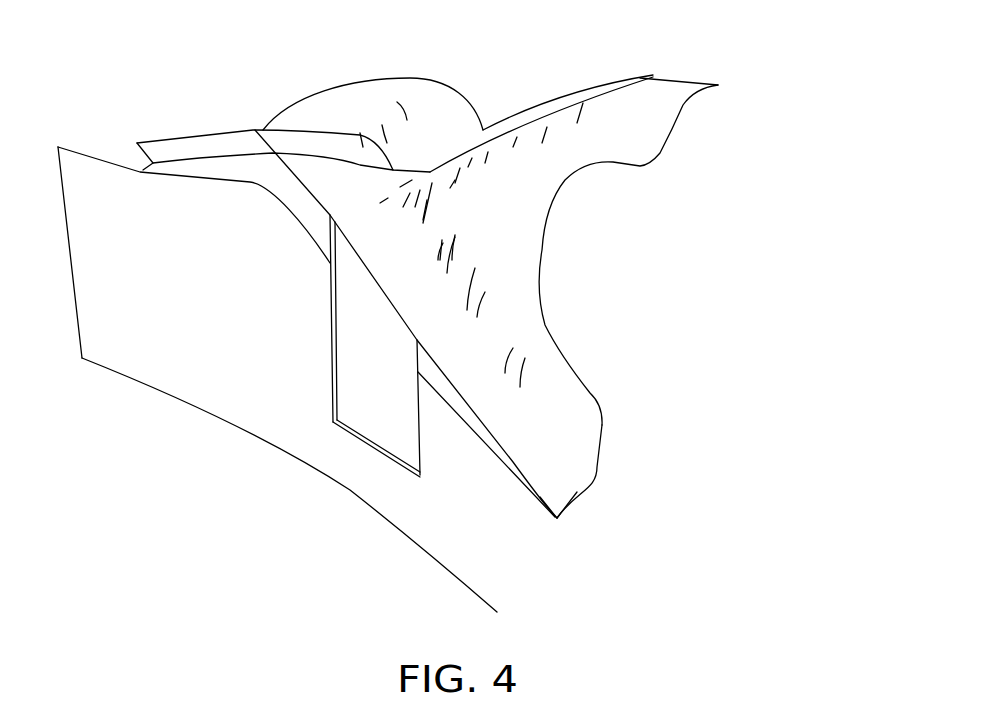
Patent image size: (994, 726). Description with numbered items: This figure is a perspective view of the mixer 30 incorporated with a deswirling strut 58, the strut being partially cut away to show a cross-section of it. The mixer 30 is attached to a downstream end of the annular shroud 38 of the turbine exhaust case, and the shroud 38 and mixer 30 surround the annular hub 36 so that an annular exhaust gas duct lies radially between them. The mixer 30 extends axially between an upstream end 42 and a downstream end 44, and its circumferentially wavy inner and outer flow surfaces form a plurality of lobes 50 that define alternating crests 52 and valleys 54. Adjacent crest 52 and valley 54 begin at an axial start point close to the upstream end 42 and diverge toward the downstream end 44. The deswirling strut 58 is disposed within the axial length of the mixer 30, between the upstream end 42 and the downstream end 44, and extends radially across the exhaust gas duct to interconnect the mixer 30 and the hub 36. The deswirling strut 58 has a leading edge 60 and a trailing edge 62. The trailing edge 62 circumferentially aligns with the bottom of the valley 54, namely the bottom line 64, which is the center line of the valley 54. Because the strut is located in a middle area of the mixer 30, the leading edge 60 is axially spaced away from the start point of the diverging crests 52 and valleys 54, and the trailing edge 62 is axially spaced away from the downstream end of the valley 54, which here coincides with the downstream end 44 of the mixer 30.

The mixer 30 is at (433, 102).
The annular hub 36 is at (163, 390).
The annular shroud 38 is at (83, 150).
The upstream end 42 is at (143, 150).
The downstream end 44 is at (598, 468).
The lobes 50 is at (640, 128).
The crests 52 is at (683, 78).
The valleys 54 is at (558, 520).
The deswirling strut 58 is at (398, 423).
The leading edge 60 is at (333, 348).
The trailing edge 62 is at (425, 437).
The bottom line 64 is at (510, 463).